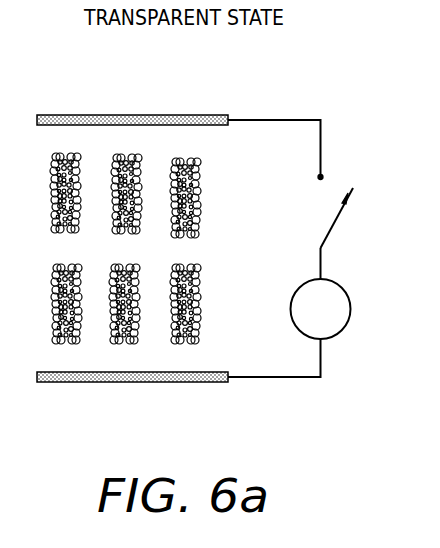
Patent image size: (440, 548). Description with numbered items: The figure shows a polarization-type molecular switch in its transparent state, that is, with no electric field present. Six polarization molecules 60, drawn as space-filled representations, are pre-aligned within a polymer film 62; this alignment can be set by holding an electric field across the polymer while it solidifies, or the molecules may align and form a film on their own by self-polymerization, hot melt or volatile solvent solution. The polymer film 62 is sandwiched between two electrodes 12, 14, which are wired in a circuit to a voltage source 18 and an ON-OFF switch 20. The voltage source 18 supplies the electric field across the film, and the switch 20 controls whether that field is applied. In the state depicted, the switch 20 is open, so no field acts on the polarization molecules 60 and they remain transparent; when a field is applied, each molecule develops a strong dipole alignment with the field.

The electrode 12 is at (133, 115).
The electrode 14 is at (128, 383).
The voltage source 18 is at (345, 327).
The ON-OFF switch 20 is at (333, 225).
The polarization molecules 60 is at (199, 190).
The polymer film 62 is at (227, 265).